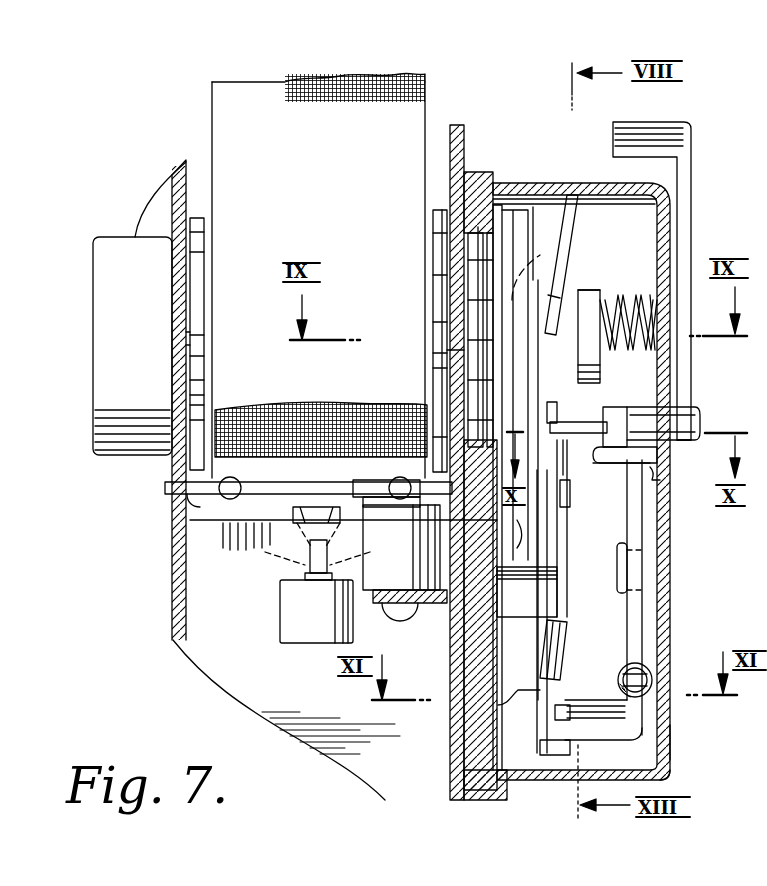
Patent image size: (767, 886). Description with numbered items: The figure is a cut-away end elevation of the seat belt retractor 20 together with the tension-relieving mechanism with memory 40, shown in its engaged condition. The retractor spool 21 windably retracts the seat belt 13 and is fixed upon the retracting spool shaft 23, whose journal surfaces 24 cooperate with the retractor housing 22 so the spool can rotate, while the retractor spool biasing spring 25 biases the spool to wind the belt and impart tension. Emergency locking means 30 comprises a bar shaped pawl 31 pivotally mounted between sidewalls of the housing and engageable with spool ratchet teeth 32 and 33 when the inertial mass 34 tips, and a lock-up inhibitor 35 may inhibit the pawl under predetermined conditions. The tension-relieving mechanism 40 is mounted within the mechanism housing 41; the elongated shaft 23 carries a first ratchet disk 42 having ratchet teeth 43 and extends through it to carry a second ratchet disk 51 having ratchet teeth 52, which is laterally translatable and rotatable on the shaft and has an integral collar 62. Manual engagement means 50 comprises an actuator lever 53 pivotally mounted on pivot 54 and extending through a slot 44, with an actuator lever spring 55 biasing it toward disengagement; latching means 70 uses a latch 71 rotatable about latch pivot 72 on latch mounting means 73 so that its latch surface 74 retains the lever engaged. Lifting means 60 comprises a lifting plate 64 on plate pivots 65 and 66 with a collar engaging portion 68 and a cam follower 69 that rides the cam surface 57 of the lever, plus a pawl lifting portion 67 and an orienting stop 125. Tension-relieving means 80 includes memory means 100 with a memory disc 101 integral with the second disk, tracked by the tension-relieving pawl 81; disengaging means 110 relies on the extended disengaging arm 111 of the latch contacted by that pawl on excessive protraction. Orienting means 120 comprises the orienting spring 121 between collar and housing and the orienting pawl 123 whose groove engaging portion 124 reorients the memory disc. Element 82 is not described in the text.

The seat belt 13 is at (228, 86).
The seat belt retractor 20 is at (200, 158).
The retractor spool 21 is at (213, 290).
The retractor housing 22 is at (187, 560).
The retracting spool shaft 23 is at (183, 338).
The journal surfaces 24 is at (455, 352).
The retractor spool biasing spring 25 is at (100, 265).
The emergency locking means 30 is at (226, 562).
The pawl 31 is at (190, 517).
The spool ratchet teeth 32 is at (200, 387).
The spool ratchet teeth 33 is at (440, 370).
The inertial mass 34 is at (297, 622).
The lock-up inhibitor 35 is at (380, 562).
The tension-relieving mechanism with memory 40 is at (669, 742).
The mechanism housing 41 is at (672, 765).
The first ratchet disk 42 is at (475, 330).
The ratchet teeth 43 is at (490, 280).
The slot 44 is at (687, 398).
The manual engagement means 50 is at (655, 628).
The second ratchet disk 51 is at (500, 205).
The ratchet teeth 52 is at (500, 250).
The actuator lever 53 is at (655, 130).
The pivot 54 is at (650, 560).
The actuator lever spring 55 is at (653, 674).
The cam surface 57 is at (563, 717).
The lifting means 60 is at (531, 741).
The collar 62 is at (597, 292).
The lifting plate 64 is at (498, 706).
The plate pivot 65 is at (523, 610).
The plate pivot 66 is at (518, 545).
The pawl lifting portion 67 is at (557, 403).
The collar engaging portion 68 is at (567, 300).
The cam follower 69 is at (557, 752).
The latching means 70 is at (610, 477).
The latch 71 is at (610, 415).
The latch pivot 72 is at (650, 456).
The latch mounting means 73 is at (658, 481).
The latch surface 74 is at (680, 424).
The tension-relieving means 80 is at (567, 562).
The tension-relieving pawl 81 is at (567, 580).
The tab 82 is at (447, 322).
The memory means 100 is at (533, 224).
The memory disc 101 is at (513, 207).
The disengaging means 110 is at (462, 402).
The disengaging arm 111 is at (571, 455).
The orienting means 120 is at (640, 282).
The orienting spring 121 is at (646, 295).
The orienting pawl 123 is at (576, 205).
The groove engaging portion 124 is at (530, 275).
The orienting stop 125 is at (562, 500).